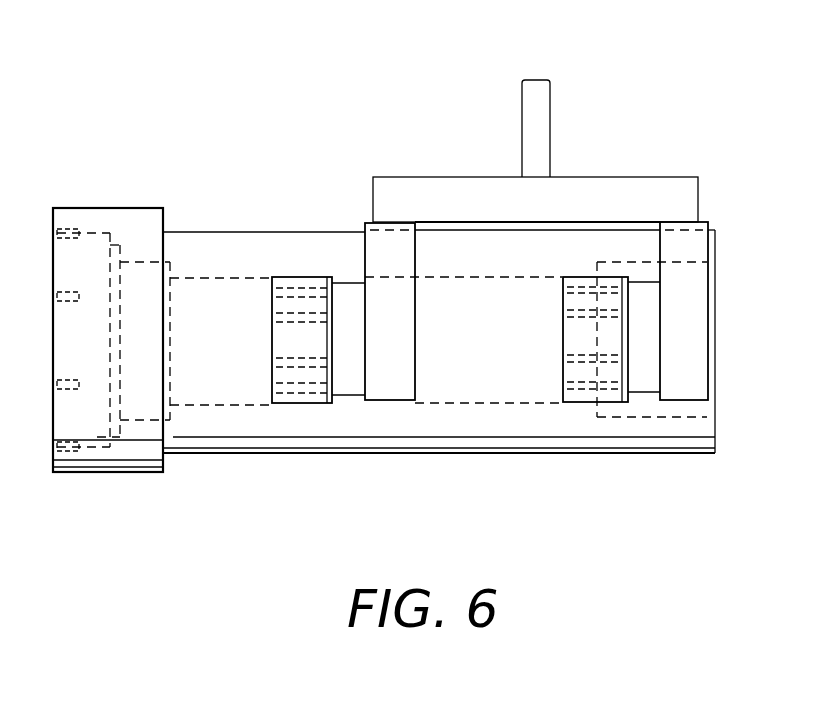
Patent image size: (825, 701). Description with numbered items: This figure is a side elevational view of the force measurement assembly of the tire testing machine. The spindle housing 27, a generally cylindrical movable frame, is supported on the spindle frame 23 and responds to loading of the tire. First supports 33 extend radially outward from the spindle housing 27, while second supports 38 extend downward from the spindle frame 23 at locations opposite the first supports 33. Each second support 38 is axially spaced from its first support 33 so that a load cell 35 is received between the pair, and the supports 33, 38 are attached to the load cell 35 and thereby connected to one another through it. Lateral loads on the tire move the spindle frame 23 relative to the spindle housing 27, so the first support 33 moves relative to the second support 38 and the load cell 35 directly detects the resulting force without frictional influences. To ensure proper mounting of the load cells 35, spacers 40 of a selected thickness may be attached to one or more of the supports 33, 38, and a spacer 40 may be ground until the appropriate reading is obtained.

The spindle frame 23 is at (540, 112).
The spindle housing 27 is at (463, 423).
The first support 33 is at (288, 400).
The load cell 35 is at (348, 297).
The second support 38 is at (383, 390).
The spacer 40 is at (333, 373).